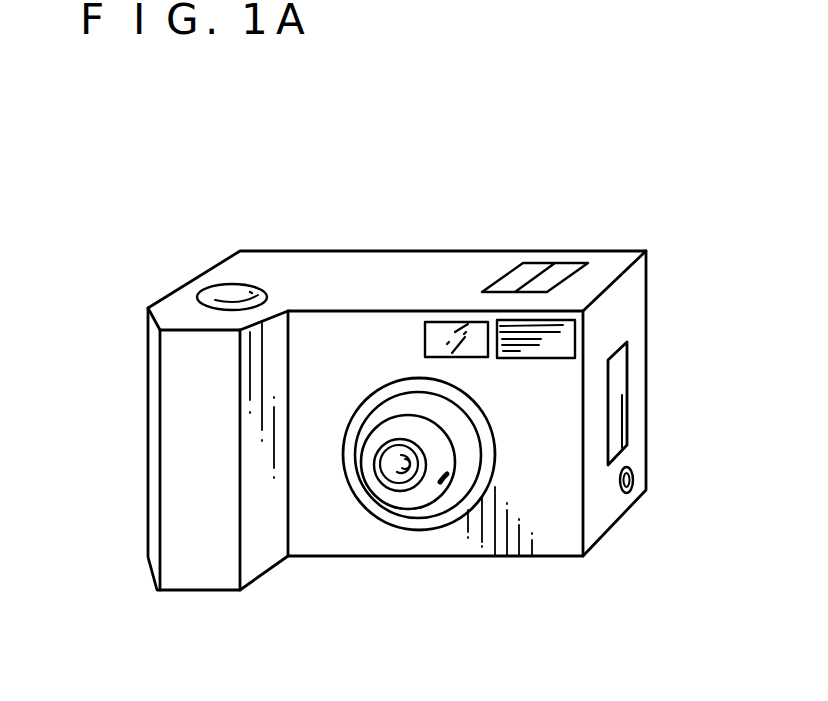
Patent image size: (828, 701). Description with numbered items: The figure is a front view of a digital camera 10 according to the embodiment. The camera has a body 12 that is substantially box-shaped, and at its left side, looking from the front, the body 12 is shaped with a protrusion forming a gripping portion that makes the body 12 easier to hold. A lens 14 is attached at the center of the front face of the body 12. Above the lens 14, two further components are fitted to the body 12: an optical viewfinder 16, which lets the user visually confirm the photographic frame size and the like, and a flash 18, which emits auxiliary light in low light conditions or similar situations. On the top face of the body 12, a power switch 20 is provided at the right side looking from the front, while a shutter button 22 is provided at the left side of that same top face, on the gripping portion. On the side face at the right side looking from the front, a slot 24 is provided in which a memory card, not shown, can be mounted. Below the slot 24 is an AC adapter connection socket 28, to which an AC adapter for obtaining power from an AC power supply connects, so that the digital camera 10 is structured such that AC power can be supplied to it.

The digital camera 10 is at (423, 131).
The body 12 is at (393, 272).
The lens 14 is at (385, 463).
The optical viewfinder 16 is at (425, 341).
The flash 18 is at (530, 350).
The power switch 20 is at (557, 272).
The shutter button 22 is at (224, 292).
The slot 24 is at (613, 404).
The AC adapter connection socket 28 is at (633, 478).